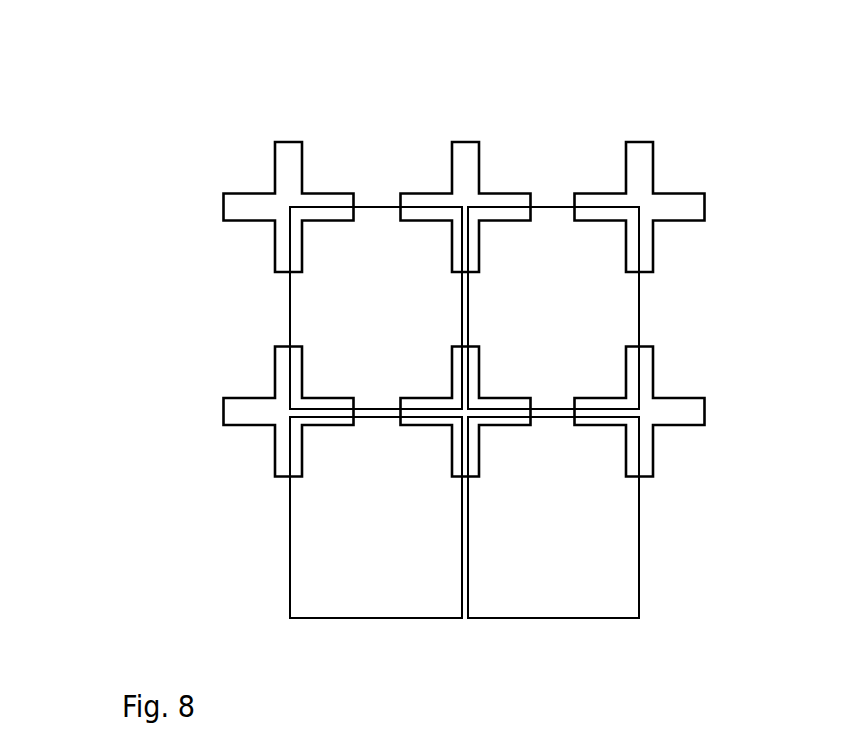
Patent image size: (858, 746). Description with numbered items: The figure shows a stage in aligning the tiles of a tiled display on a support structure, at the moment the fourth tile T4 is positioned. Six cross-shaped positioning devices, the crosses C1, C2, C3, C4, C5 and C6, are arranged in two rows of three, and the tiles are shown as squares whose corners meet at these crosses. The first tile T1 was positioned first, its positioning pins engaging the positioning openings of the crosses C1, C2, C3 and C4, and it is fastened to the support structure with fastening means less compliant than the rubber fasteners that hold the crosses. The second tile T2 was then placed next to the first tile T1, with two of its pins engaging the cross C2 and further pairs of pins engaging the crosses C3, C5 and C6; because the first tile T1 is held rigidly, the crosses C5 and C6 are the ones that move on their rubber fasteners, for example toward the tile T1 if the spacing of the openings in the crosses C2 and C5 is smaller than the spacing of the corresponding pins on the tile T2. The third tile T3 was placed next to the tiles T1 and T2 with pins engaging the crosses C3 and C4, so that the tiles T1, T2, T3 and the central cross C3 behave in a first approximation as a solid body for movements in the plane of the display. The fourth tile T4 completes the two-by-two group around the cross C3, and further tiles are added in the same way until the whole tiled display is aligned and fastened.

The cross C1 is at (257, 172).
The cross C2 is at (509, 160).
The cross C3 is at (506, 438).
The cross C4 is at (247, 377).
The cross C5 is at (678, 165).
The cross C6 is at (678, 365).
The first tile T1 is at (376, 308).
The second tile T2 is at (553, 308).
The third tile T3 is at (376, 517).
The fourth tile T4 is at (553, 517).